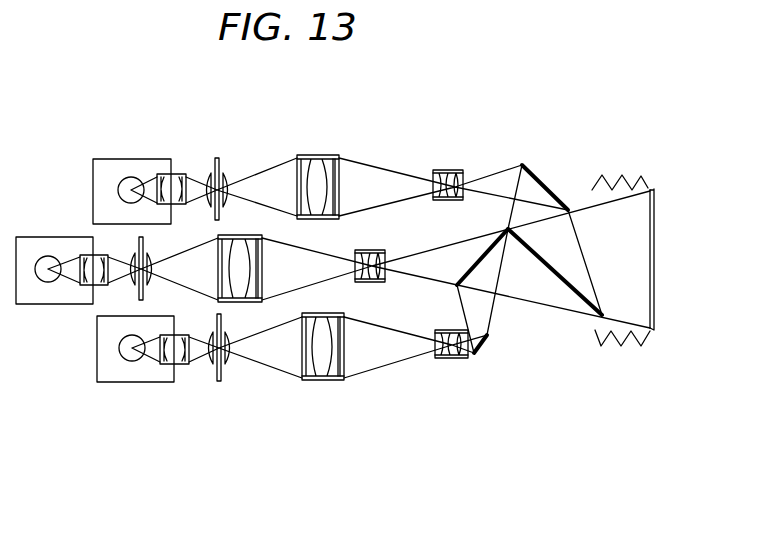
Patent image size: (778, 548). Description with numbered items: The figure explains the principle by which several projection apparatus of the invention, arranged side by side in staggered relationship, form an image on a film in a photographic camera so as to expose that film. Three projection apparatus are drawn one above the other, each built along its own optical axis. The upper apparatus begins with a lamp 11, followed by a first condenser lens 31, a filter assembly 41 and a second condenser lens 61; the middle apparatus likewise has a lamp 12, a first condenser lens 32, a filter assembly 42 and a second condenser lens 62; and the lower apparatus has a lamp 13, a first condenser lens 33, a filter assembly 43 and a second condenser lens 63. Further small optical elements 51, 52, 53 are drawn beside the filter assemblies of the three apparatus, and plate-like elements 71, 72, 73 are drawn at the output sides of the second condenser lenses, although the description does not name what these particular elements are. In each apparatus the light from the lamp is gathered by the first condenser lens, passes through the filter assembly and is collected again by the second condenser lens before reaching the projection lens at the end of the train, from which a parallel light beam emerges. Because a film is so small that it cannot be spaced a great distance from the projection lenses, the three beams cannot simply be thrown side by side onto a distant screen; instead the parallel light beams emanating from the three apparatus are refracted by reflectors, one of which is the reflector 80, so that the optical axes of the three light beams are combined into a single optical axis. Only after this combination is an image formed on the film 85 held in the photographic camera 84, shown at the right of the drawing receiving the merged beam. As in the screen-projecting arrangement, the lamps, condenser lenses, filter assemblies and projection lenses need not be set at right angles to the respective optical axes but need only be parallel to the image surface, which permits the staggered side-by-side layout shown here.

The lamp 11 is at (127, 178).
The lamp 12 is at (45, 258).
The lamp 13 is at (135, 362).
The first condenser lens 31 is at (179, 174).
The first condenser lens 32 is at (88, 255).
The first condenser lens 33 is at (180, 364).
The filter assembly 41 is at (217, 158).
The filter assembly 42 is at (143, 240).
The filter assembly 43 is at (220, 381).
The slit lens pair (first channel) 51 is at (227, 186).
The slit lens pair (second channel) 52 is at (150, 262).
The slit lens pair (third channel) 53 is at (228, 360).
The second condenser lens 61 is at (310, 158).
The second condenser lens 62 is at (252, 240).
The second condenser lens 63 is at (324, 370).
The color filter (first channel) 71 is at (340, 174).
The color filter (second channel) 72 is at (262, 257).
The color filter (third channel) 73 is at (345, 358).
The reflector 80 is at (535, 177).
The photographic camera 84 is at (638, 177).
The film 85 is at (657, 290).